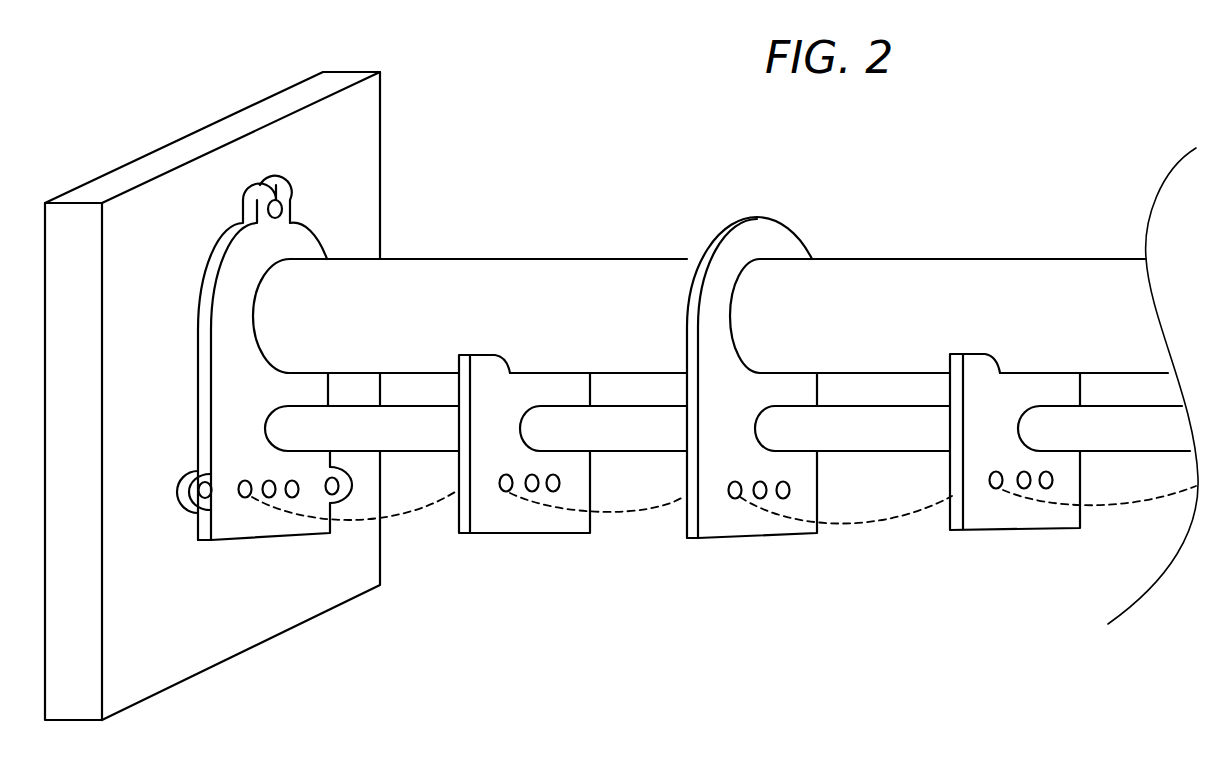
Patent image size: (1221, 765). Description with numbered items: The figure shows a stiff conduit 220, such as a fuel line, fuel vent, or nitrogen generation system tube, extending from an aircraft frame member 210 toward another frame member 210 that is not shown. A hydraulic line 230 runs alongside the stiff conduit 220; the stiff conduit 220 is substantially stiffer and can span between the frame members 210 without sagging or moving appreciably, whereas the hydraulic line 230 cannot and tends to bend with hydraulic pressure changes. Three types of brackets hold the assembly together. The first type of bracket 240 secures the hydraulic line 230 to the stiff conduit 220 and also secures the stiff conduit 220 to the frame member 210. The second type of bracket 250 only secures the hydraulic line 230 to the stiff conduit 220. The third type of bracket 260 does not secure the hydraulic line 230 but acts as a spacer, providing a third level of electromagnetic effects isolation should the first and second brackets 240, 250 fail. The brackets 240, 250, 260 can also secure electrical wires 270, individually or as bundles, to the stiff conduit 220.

The aircraft frame member 210 is at (383, 106).
The stiff conduit 220 is at (582, 259).
The hydraulic line 230 is at (846, 452).
The first type of bracket 240 is at (226, 248).
The second type of bracket 250 is at (745, 537).
The third type of bracket 260 is at (507, 530).
The electrical wires 270 is at (630, 512).